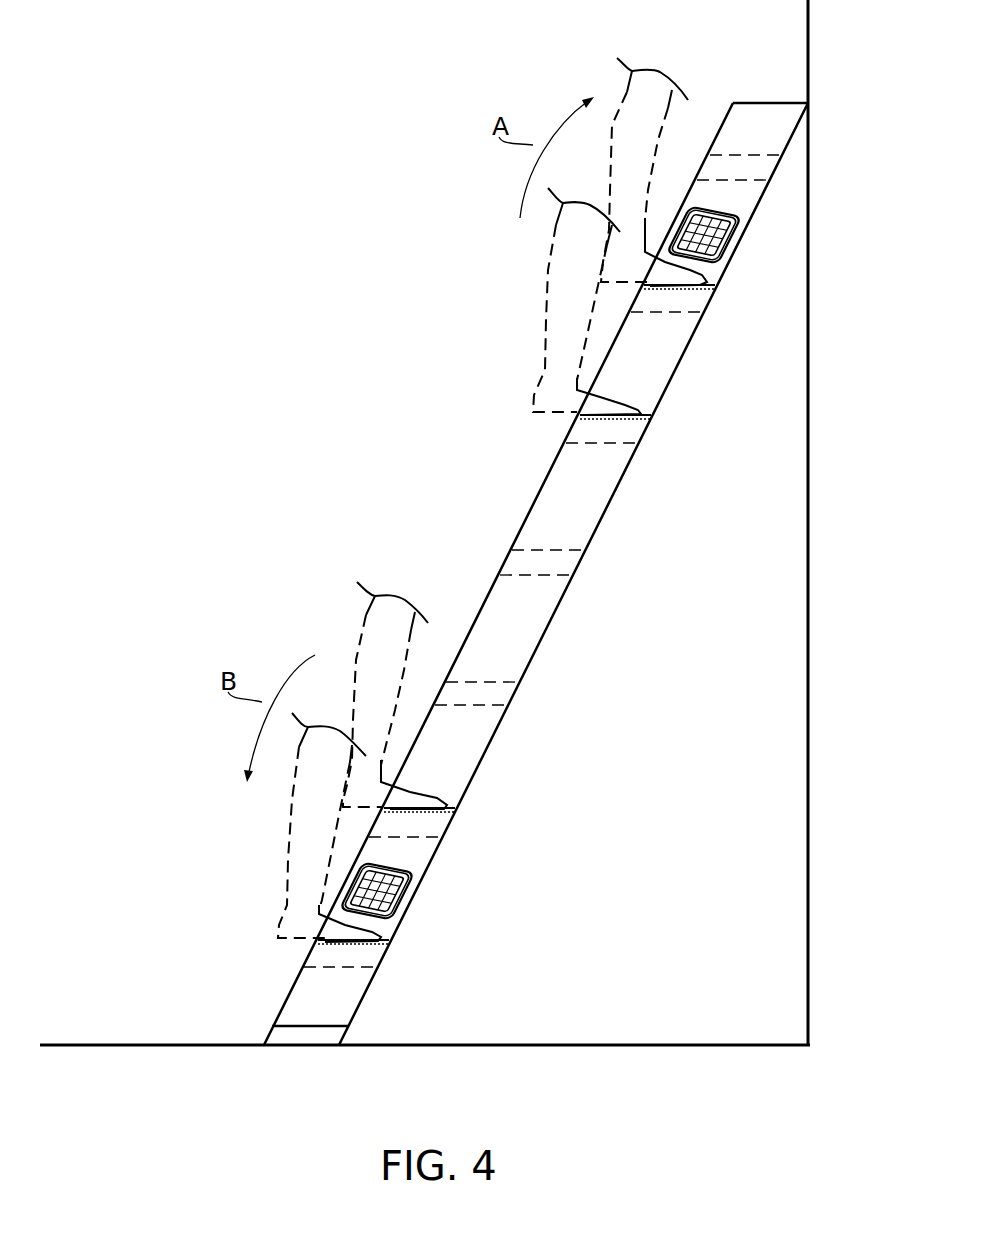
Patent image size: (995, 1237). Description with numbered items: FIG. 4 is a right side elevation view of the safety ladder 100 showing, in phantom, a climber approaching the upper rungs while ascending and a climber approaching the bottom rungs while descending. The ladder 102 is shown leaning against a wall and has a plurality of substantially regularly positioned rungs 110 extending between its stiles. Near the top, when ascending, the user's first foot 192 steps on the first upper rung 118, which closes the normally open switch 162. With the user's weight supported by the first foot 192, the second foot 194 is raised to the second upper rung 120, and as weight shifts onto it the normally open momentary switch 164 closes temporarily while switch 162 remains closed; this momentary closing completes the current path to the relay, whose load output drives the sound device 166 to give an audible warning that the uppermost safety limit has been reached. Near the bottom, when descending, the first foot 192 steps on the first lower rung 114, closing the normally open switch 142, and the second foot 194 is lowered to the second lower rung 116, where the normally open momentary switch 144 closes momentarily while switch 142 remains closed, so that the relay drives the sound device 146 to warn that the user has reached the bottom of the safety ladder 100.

The safety ladder 100 is at (386, 97).
The ladder 102 is at (503, 536).
The rungs 110 is at (545, 577).
The first lower rung 114 is at (400, 840).
The second lower rung 116 is at (347, 969).
The first upper rung 118 is at (608, 443).
The second upper rung 120 is at (690, 313).
The normally open switch 142 is at (450, 802).
The normally open momentary switch 144 is at (382, 935).
The sound device 146 is at (396, 860).
The normally open switch 162 is at (645, 412).
The normally open momentary switch 164 is at (707, 283).
The sound device 166 is at (712, 211).
The first foot 192 is at (546, 300).
The second foot 194 is at (670, 134).